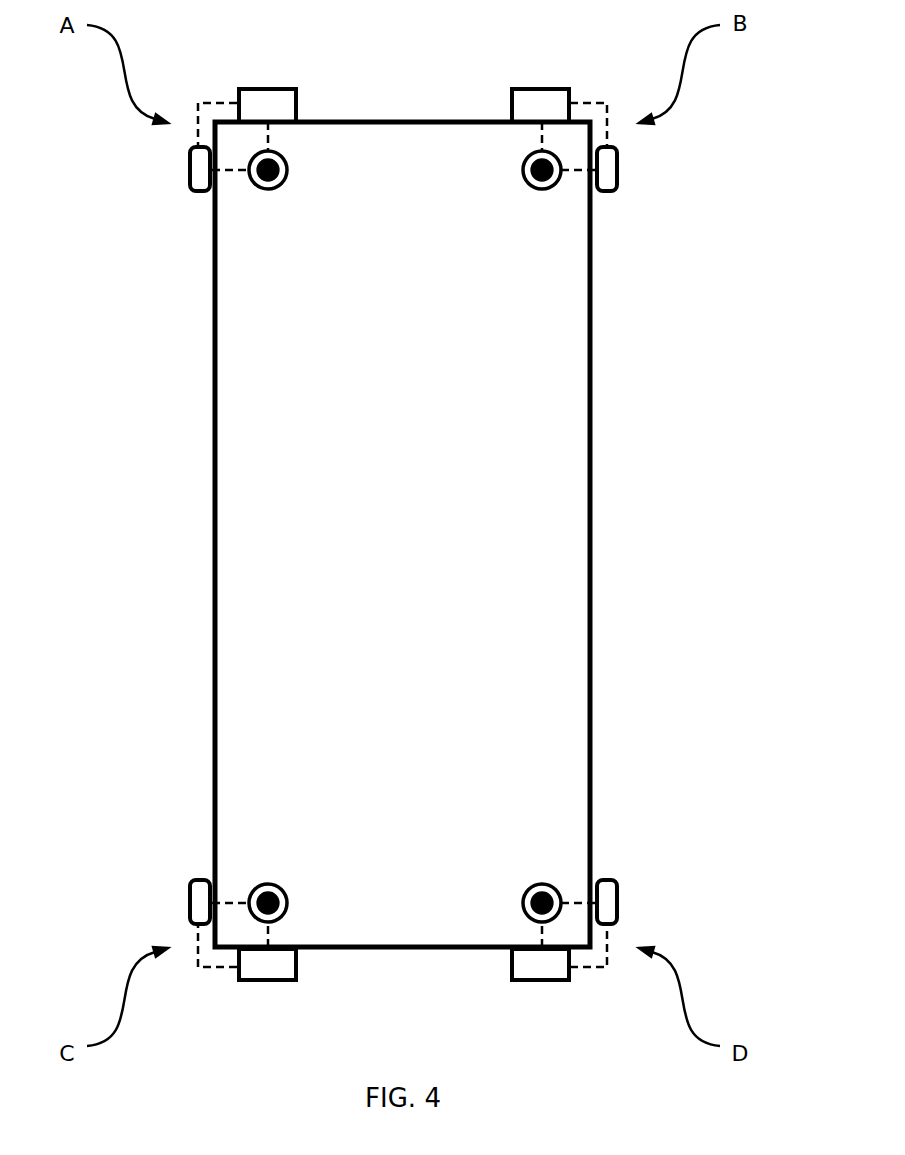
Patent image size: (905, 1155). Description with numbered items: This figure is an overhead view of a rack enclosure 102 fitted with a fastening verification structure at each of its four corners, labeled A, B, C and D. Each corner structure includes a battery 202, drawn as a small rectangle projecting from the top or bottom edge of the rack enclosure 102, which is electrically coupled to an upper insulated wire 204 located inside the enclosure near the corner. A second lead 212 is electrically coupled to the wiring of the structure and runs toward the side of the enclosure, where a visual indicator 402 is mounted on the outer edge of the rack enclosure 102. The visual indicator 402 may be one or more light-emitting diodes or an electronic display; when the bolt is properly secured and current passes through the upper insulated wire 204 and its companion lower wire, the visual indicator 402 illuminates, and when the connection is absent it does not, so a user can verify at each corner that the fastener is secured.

The rack enclosure 102 is at (215, 549).
The battery 202 is at (540, 87).
The upper insulated wire 204 is at (268, 182).
The second lead 212 is at (525, 177).
The visual indicator 402 is at (198, 193).